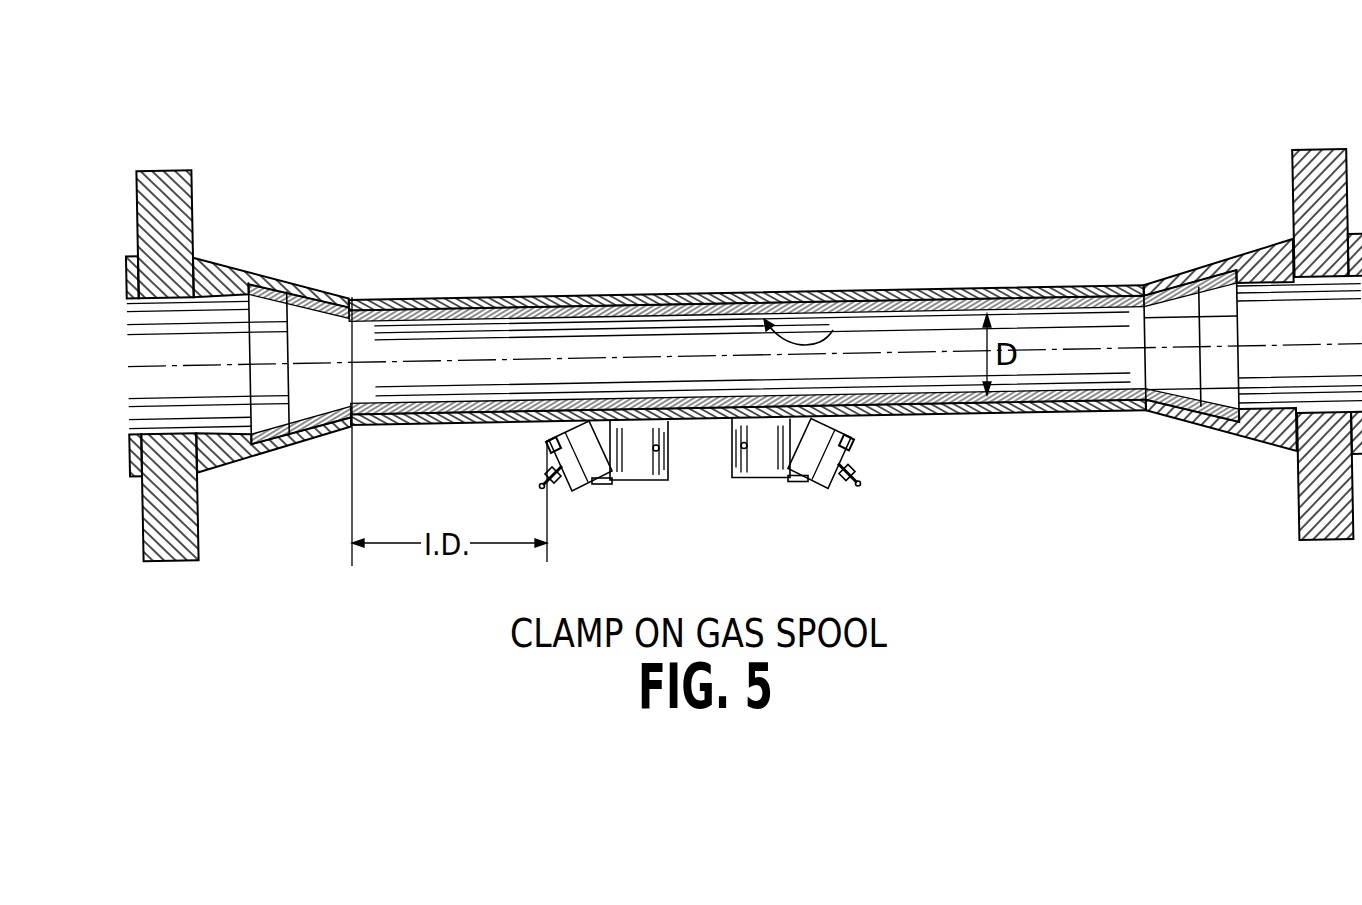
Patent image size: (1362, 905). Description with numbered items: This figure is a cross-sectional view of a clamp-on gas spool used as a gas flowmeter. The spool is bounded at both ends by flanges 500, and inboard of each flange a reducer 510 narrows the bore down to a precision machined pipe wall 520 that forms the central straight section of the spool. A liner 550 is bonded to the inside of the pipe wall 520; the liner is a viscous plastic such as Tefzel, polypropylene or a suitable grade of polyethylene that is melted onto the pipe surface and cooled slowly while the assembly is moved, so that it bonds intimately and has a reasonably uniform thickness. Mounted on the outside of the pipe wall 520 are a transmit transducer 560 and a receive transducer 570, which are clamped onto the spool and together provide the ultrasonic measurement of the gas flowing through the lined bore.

The flanges 500 is at (194, 171).
The reducer 510 is at (321, 288).
The precision machined pipe wall 520 is at (579, 290).
The liner 550 is at (836, 340).
The transmit transducer 560 is at (618, 482).
The receive transducer 570 is at (822, 487).